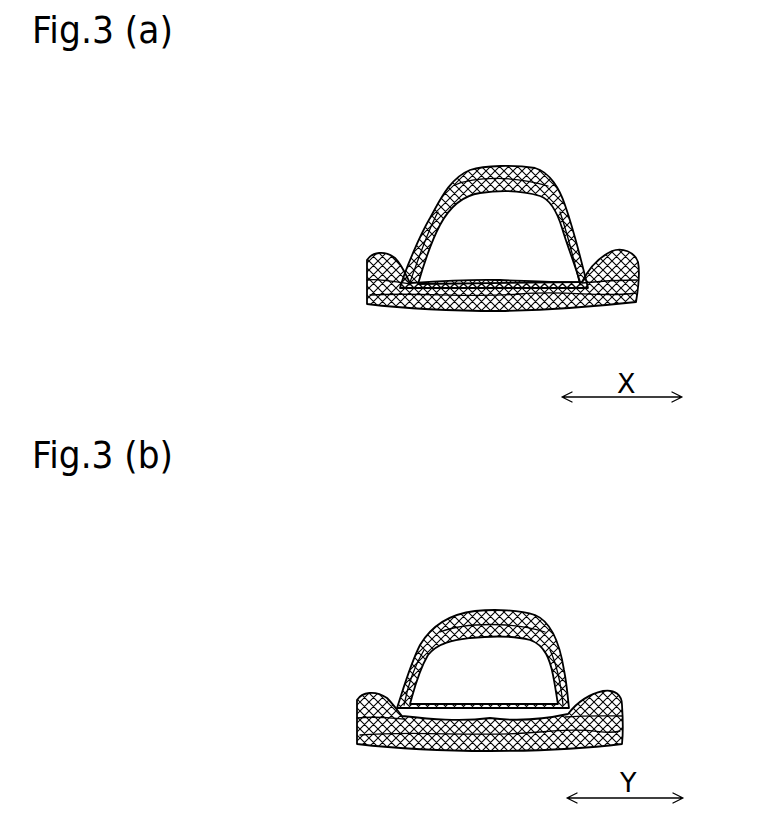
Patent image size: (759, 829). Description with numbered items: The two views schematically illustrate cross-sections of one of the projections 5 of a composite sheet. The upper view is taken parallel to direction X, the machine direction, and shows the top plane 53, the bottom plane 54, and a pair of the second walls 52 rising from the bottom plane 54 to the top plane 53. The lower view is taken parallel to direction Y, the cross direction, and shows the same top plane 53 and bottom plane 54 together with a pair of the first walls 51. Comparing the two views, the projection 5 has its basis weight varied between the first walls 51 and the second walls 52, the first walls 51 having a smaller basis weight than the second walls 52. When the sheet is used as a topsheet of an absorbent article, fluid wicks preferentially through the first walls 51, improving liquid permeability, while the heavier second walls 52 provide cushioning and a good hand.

In FIG. 3A, the projection 5 is at (509, 175).
In FIG. 3B, the projection 5 is at (485, 620).
In FIG. 3B, the first wall 51 is at (400, 682).
In FIG. 3A, the second wall 52 is at (422, 224).
In FIG. 3A, the top plane 53 is at (497, 170).
In FIG. 3B, the top plane 53 is at (493, 613).
In FIG. 3A, the bottom plane 54 is at (487, 308).
In FIG. 3B, the bottom plane 54 is at (488, 748).